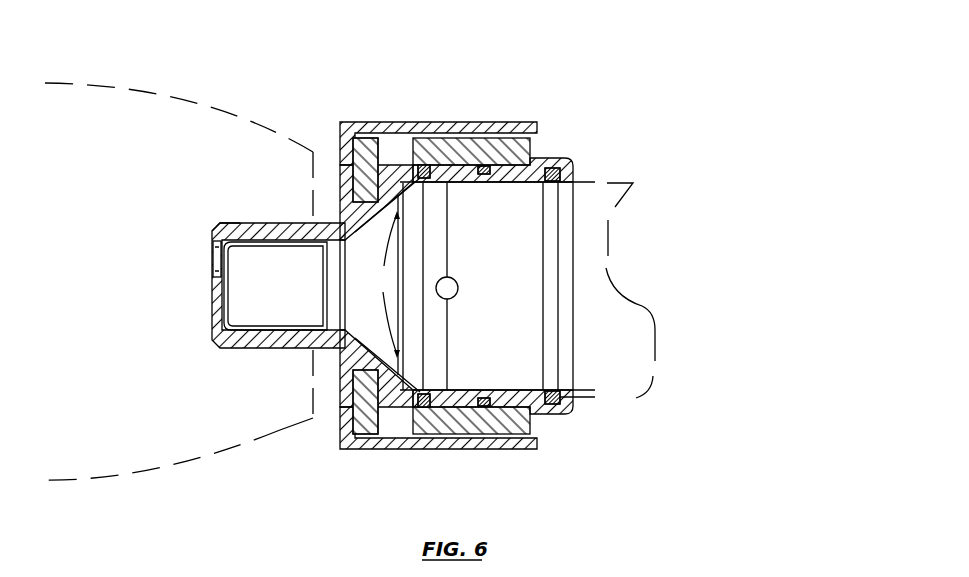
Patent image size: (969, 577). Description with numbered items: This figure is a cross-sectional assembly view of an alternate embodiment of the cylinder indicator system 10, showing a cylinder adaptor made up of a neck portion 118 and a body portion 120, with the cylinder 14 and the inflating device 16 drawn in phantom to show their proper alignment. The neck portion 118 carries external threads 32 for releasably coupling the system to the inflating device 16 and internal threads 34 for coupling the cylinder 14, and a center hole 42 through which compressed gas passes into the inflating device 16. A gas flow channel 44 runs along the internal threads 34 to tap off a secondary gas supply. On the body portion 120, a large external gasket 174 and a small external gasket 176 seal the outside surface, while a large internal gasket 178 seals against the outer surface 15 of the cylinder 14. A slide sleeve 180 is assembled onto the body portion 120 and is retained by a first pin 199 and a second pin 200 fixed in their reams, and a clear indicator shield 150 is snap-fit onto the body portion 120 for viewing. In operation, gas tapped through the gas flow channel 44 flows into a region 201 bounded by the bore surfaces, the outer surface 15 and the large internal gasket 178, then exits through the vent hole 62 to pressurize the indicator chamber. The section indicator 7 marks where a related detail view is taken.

The cylinder indicator system 10 is at (405, 278).
The cylinder 14 is at (658, 358).
The outer surface 15 is at (608, 398).
The inflating device 16 is at (193, 466).
The external threads 32 is at (233, 349).
The internal threads 34 is at (280, 349).
The center hole 42 is at (219, 300).
The gas flow channel 44 is at (216, 262).
The vent hole 62 is at (458, 289).
The neck portion 118 is at (214, 225).
The body portion 120 is at (583, 172).
The indicator shield 150 is at (509, 452).
The large external gasket 174 is at (437, 392).
The small external gasket 176 is at (496, 185).
The large internal gasket 178 is at (561, 185).
The slide sleeve 180 is at (540, 137).
The first pin 199 is at (372, 118).
The second pin 200 is at (373, 450).
The region 201 is at (379, 284).
The section line 7 is at (620, 219).